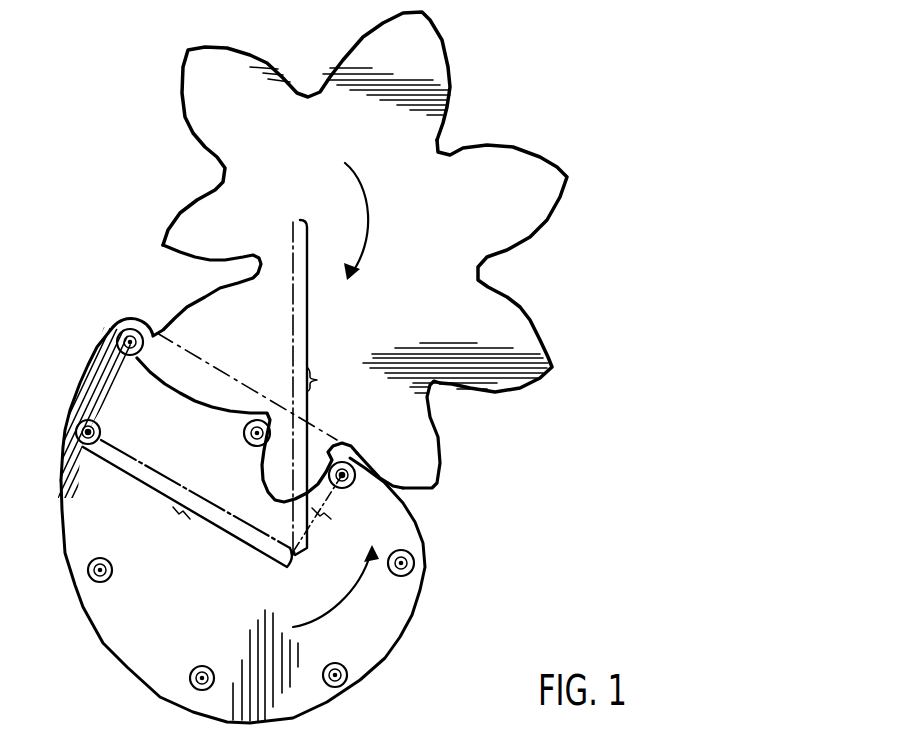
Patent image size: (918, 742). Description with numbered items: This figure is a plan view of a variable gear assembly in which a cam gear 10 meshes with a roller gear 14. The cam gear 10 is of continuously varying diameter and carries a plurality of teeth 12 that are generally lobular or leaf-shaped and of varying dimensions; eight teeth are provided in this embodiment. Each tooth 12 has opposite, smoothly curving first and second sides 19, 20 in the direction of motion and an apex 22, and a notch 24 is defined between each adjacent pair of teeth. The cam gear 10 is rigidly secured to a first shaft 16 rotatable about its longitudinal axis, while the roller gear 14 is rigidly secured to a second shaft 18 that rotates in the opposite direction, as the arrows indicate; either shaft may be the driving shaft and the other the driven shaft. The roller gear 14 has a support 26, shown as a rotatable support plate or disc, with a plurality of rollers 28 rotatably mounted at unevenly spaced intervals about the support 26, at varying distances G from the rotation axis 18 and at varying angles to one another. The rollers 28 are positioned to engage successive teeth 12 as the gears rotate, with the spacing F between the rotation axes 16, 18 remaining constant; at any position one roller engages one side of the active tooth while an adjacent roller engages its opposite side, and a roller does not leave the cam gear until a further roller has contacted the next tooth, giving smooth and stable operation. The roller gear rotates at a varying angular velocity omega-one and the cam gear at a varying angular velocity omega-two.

The cam gear 10 is at (453, 180).
The teeth 12 is at (537, 232).
The roller gear 14 is at (264, 521).
The first shaft 16 is at (293, 220).
The second shaft 18 is at (292, 581).
The first side 19 is at (403, 490).
The second side 20 is at (444, 459).
The apex 22 is at (311, 364).
The notch 24 is at (252, 263).
The support 26 is at (393, 645).
The rollers 28 is at (117, 335).